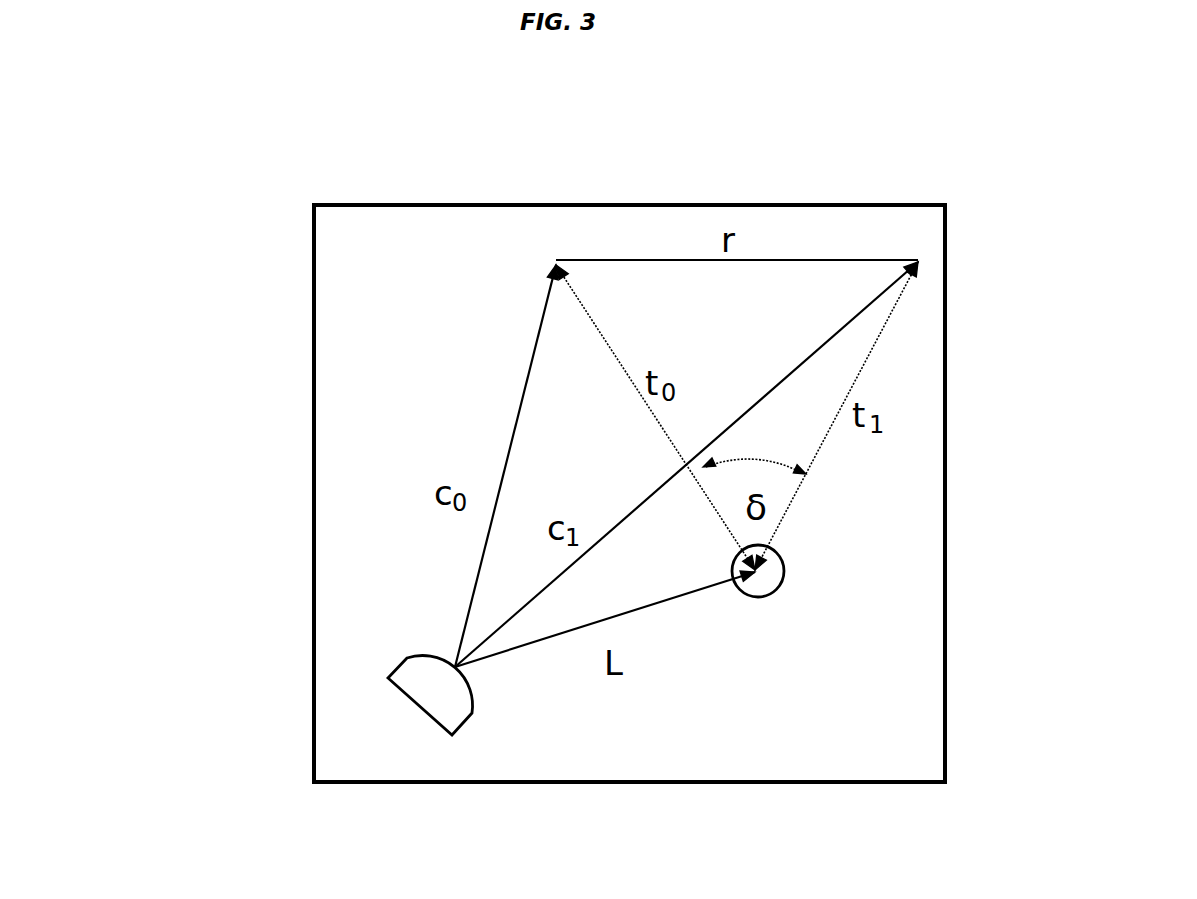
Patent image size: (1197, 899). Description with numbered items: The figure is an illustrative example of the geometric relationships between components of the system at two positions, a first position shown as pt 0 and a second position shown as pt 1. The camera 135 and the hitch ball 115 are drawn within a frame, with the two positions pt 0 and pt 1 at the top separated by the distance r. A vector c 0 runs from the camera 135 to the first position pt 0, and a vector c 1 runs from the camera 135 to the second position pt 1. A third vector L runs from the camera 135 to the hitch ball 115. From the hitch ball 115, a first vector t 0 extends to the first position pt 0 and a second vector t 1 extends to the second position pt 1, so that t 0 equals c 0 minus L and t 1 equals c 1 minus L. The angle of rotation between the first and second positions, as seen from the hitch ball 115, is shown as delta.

The hitch ball 115 is at (760, 600).
The camera 135 is at (445, 735).
The first tracked point pt0 0 is at (564, 250).
The second tracked point pt1 1 is at (911, 248).